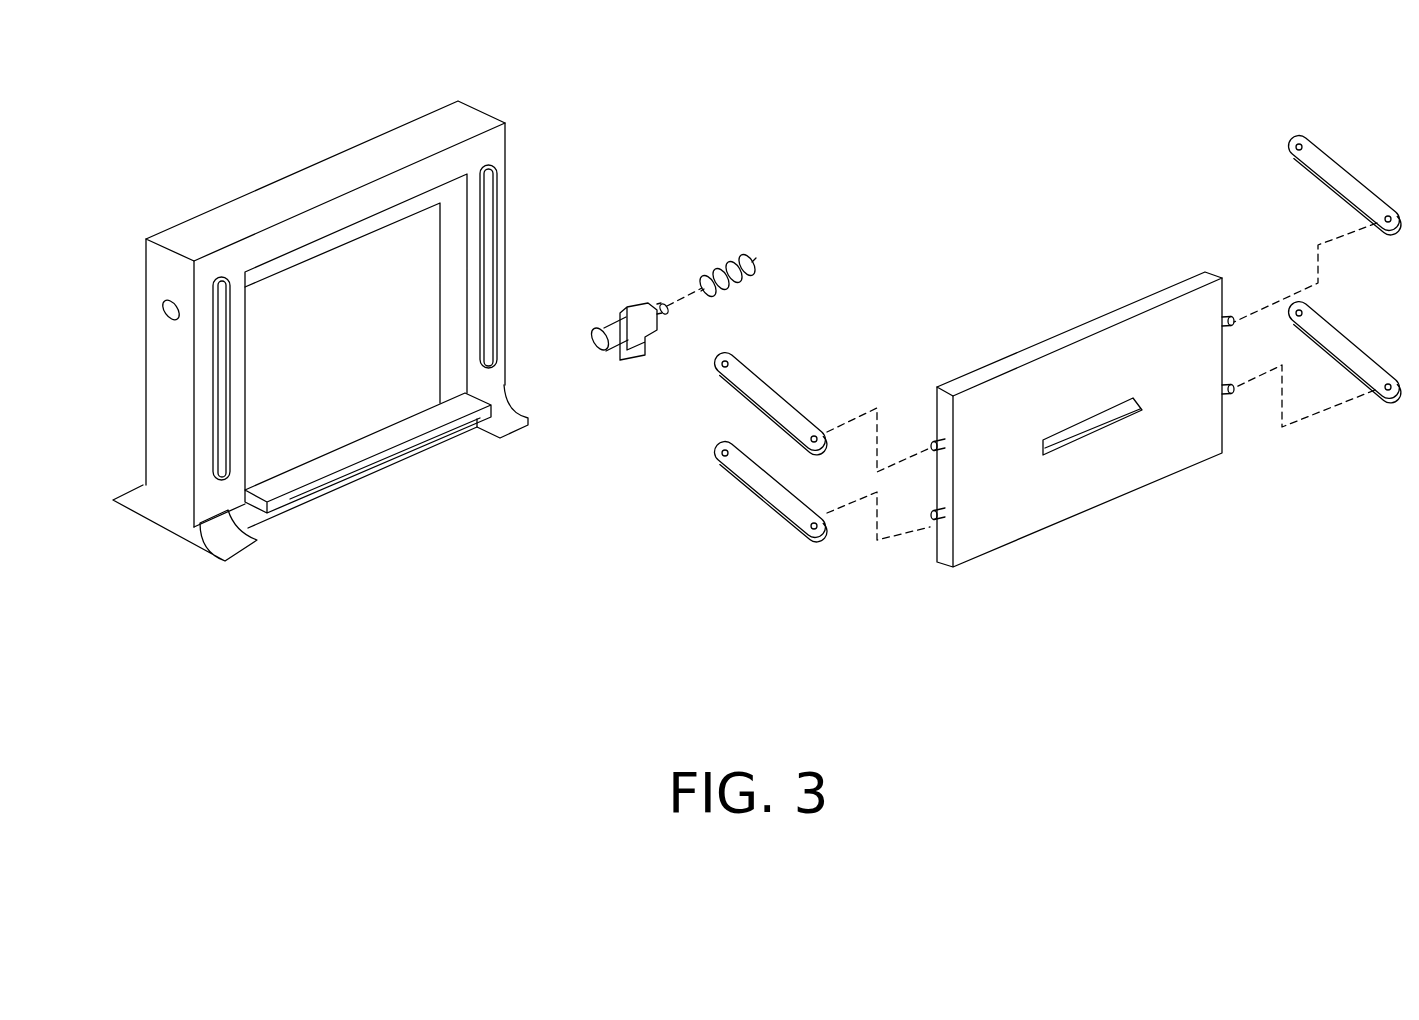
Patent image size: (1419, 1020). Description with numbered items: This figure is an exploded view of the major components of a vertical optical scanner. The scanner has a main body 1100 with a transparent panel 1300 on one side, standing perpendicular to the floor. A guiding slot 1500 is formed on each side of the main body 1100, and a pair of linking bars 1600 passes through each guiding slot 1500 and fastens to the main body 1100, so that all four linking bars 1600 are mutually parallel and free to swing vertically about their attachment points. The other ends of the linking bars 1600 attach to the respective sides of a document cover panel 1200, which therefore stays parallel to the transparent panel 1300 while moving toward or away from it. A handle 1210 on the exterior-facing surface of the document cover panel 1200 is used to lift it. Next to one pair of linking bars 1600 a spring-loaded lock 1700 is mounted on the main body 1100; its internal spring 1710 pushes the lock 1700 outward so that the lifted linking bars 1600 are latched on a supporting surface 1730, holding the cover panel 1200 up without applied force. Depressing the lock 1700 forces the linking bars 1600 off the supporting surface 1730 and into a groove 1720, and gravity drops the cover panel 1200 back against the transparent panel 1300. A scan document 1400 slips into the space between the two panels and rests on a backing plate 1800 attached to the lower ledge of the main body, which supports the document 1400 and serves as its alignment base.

The main body 1100 is at (398, 143).
The transparent panel 1300 is at (338, 238).
The scan document 1400 is at (275, 307).
The guiding slot 1500 is at (487, 242).
The backing plate 1800 is at (355, 458).
The spring-loaded lock 1700 is at (666, 299).
The internal spring 1710 is at (745, 251).
The groove 1720 is at (624, 314).
The supporting surface 1730 is at (641, 303).
The linking bar 1600 is at (772, 402).
The document cover panel 1200 is at (1092, 430).
The handle 1210 is at (1097, 424).